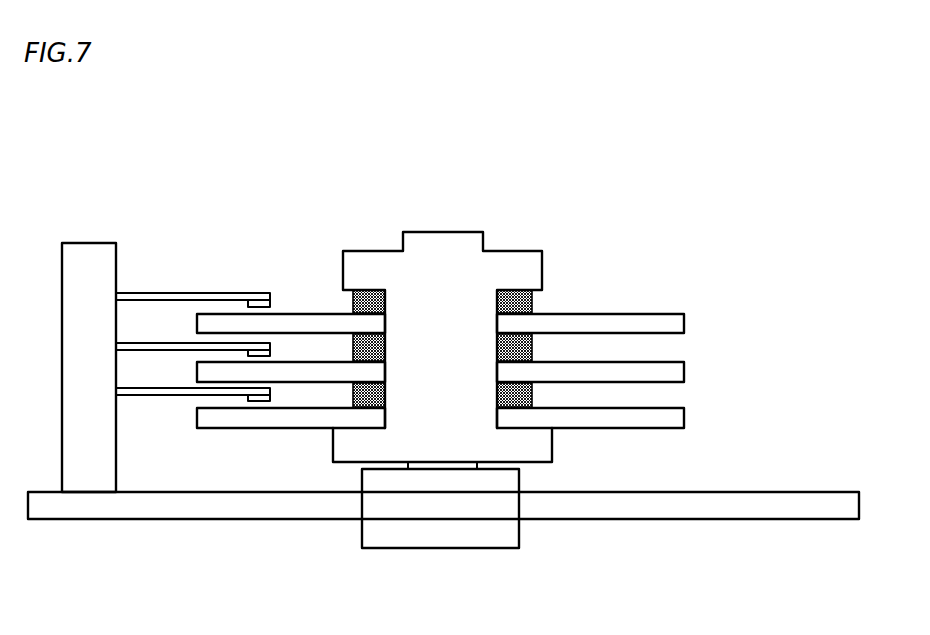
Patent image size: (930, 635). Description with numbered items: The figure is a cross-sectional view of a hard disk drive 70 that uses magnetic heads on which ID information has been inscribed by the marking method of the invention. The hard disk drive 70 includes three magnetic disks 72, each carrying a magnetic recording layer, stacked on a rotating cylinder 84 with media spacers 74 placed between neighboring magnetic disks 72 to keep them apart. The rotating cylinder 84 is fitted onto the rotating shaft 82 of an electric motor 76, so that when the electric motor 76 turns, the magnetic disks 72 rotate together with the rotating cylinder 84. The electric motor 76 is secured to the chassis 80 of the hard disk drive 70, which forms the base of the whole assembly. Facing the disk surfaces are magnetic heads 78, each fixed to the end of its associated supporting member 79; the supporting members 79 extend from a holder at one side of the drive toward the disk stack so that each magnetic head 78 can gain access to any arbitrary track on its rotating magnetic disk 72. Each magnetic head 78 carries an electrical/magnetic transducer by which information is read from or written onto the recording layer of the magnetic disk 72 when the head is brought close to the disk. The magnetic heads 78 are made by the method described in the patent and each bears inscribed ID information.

The hard disk drive 70 is at (270, 193).
The magnetic disk 72 is at (684, 323).
The media spacer 74 is at (533, 301).
The electric motor 76 is at (473, 555).
The magnetic head 78 is at (270, 303).
The supporting member 79 is at (191, 293).
The chassis 80 is at (133, 513).
The rotating shaft 82 is at (480, 465).
The rotating cylinder 84 is at (421, 273).